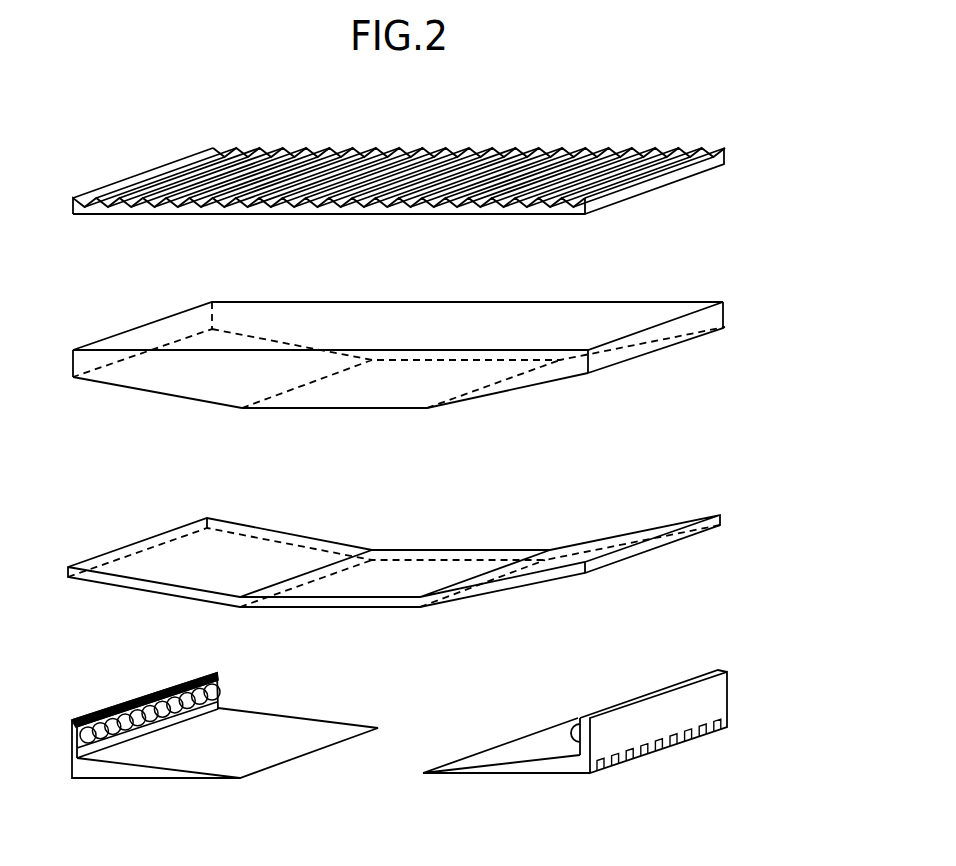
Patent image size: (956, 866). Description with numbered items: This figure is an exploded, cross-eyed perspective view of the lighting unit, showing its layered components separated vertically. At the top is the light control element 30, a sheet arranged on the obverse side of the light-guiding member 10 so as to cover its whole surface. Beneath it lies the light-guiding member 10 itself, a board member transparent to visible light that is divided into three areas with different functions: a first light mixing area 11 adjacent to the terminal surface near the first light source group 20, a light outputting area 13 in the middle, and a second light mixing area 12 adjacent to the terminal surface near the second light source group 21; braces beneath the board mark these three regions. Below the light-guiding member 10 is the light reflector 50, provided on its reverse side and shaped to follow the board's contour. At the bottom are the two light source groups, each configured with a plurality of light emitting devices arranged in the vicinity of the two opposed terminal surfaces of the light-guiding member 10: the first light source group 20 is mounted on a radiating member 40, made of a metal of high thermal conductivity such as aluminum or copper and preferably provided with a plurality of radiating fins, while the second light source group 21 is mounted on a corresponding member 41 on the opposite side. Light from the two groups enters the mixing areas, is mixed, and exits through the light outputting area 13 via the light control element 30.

The light-guiding member 10 is at (118, 343).
The first light mixing area 11 is at (242, 416).
The second light mixing area 12 is at (587, 416).
The light outputting area 13 is at (252, 416).
The first light source group 20 is at (144, 699).
The second light source group 21 is at (646, 705).
The light control element 30 is at (580, 162).
The radiating member 40 is at (130, 773).
The second light source substrate 41 is at (567, 778).
The light reflector 50 is at (475, 553).